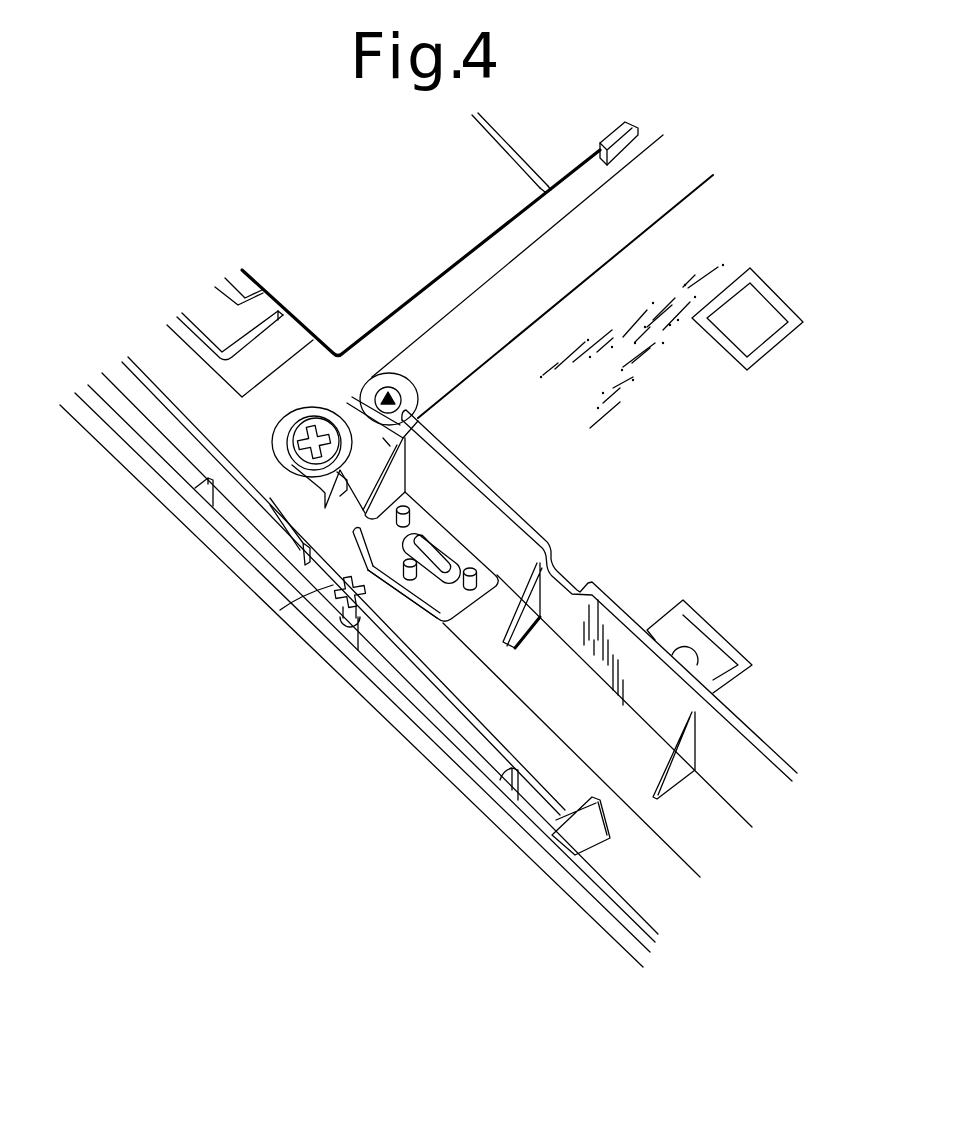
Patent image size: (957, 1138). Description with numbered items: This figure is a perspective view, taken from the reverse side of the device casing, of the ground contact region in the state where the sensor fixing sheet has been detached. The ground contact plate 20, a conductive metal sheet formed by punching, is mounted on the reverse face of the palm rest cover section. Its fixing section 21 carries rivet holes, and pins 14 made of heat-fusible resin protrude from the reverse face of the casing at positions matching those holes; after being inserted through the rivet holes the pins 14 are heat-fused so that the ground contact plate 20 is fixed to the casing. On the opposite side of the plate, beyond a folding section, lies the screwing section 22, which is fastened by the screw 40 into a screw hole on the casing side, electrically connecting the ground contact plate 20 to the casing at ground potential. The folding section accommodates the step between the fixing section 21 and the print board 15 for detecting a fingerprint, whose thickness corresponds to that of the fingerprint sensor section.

The pins 14 is at (473, 557).
The print board 15 is at (750, 522).
The ground contact plate 20 is at (436, 624).
The fixing section 21 is at (412, 520).
The screwing section 22 is at (268, 440).
The screw 40 is at (300, 462).